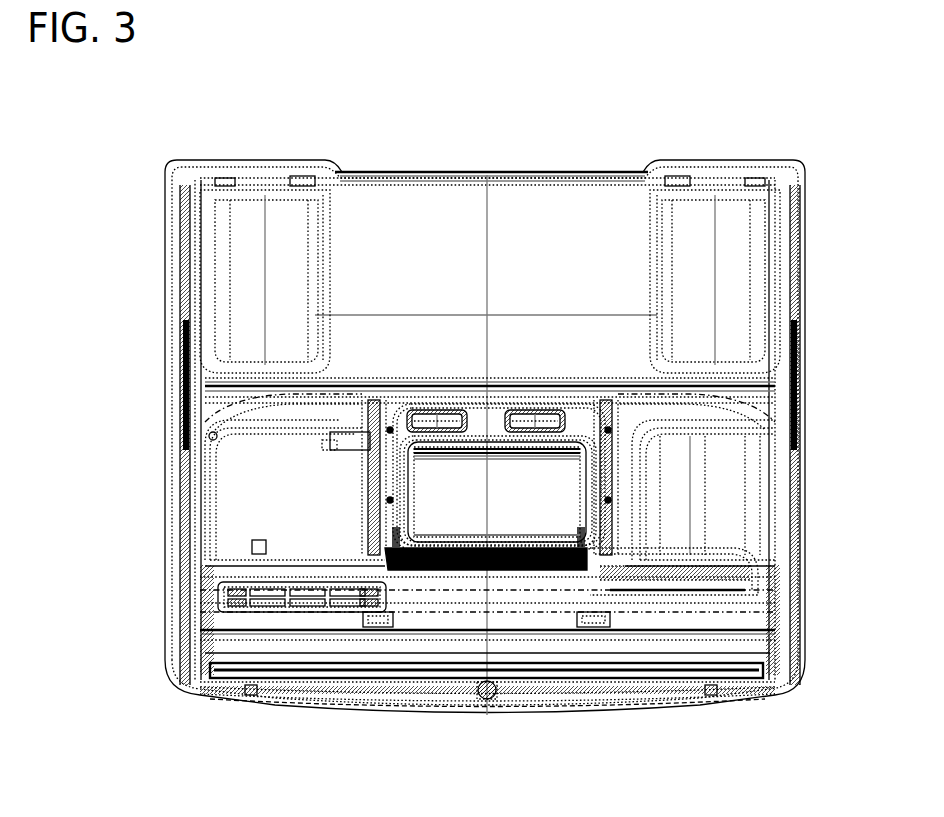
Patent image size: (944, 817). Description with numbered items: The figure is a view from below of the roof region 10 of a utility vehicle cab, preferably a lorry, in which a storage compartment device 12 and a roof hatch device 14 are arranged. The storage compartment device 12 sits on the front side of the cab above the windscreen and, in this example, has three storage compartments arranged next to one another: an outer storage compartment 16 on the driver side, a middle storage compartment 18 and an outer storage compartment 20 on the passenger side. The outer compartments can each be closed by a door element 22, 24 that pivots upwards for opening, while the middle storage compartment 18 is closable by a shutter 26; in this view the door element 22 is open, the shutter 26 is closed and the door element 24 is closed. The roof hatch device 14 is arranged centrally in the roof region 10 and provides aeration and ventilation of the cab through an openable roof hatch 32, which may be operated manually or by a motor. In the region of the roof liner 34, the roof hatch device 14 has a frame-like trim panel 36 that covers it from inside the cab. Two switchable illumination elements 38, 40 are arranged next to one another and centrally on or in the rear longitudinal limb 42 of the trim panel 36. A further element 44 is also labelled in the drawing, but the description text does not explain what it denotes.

The overhead console assembly 10 is at (487, 65).
The headliner panel 12 is at (708, 561).
The console frame 14 is at (377, 410).
The speaker grille 16 is at (240, 538).
The display screen 18 is at (452, 538).
The right storage compartment 20 is at (683, 547).
The left storage compartment 22 is at (387, 475).
The storage tray 24 is at (733, 560).
The light bar 26 is at (420, 563).
The bezel 32 is at (547, 470).
The sun visor 34 is at (232, 265).
The display frame 36 is at (580, 417).
The left lamp 38 is at (432, 418).
The right lamp 40 is at (538, 428).
The console housing 42 is at (487, 417).
The pillar trim 44 is at (197, 440).